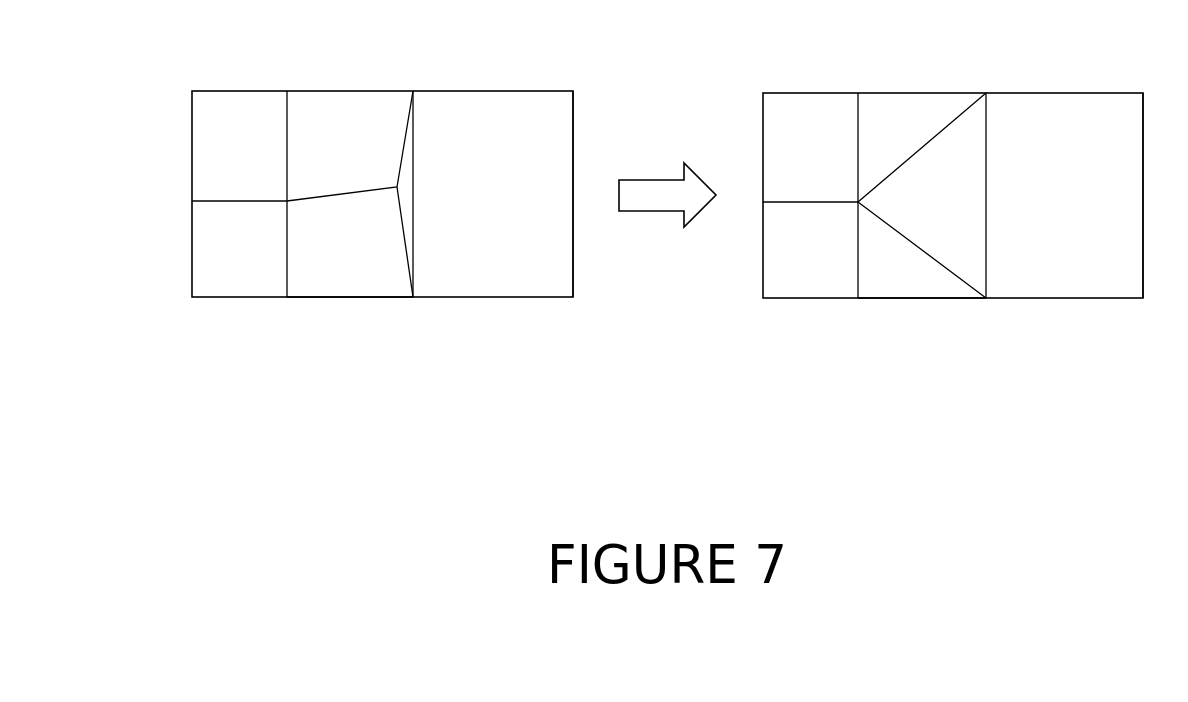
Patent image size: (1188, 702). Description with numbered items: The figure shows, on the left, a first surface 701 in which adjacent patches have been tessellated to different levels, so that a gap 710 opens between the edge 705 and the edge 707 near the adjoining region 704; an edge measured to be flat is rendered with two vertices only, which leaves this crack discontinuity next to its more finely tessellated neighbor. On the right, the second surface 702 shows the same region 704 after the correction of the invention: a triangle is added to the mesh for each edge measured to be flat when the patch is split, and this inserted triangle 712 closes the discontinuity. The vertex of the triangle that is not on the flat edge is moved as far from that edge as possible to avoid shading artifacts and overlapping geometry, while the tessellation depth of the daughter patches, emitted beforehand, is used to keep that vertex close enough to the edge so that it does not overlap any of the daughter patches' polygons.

The first surface 701 is at (354, 44).
The second surface 702 is at (925, 44).
The middle panel 704 is at (311, 100).
The edge 705 is at (334, 290).
The edge 707 is at (542, 100).
The gap 710 is at (405, 195).
The inserted triangle 712 is at (977, 196).